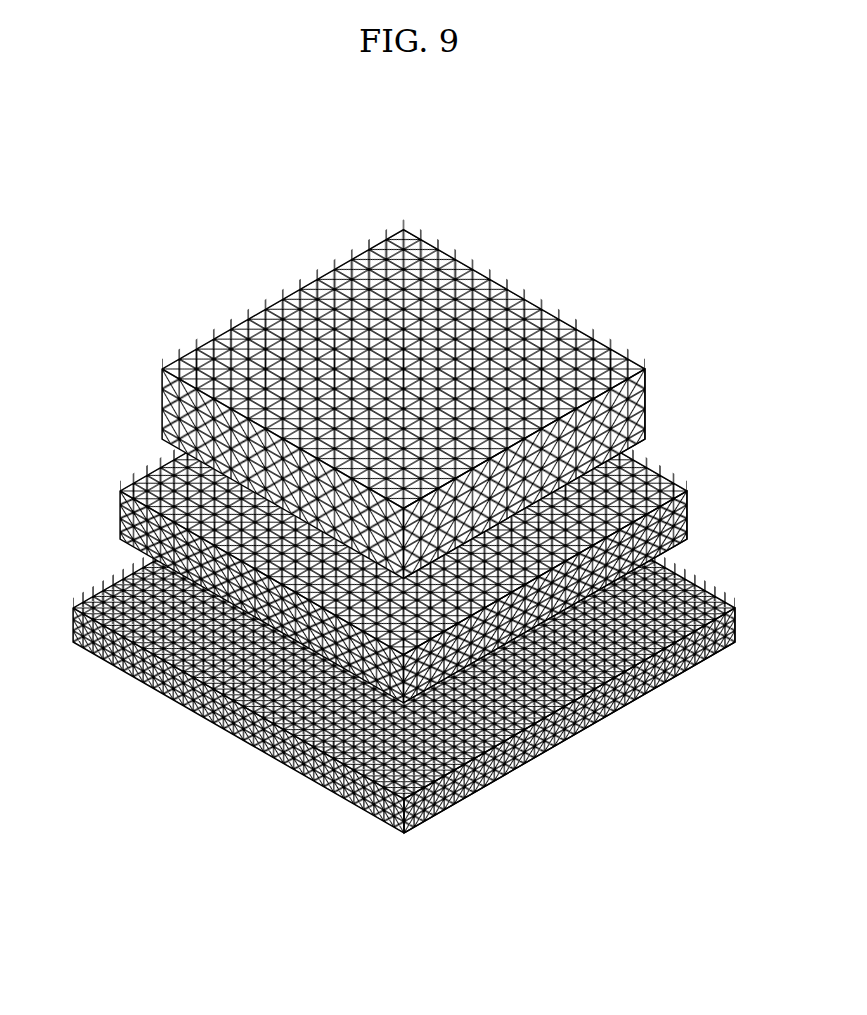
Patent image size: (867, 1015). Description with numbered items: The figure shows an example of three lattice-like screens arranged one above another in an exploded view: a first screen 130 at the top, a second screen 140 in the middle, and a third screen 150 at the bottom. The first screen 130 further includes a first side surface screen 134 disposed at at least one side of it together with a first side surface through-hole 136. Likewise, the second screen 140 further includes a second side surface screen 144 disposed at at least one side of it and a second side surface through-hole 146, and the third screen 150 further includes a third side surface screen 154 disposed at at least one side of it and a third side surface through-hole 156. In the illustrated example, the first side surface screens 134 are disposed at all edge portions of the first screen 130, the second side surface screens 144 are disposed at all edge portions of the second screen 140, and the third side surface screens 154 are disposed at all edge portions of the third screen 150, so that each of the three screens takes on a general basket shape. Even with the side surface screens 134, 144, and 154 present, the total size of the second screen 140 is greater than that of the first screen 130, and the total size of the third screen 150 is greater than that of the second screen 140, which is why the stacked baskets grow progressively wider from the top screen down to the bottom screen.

The first screen 130 is at (453, 376).
The first side surface screen 134 is at (627, 390).
The first side surface through-hole 136 is at (385, 257).
The second screen 140 is at (427, 509).
The second side surface screen 144 is at (675, 502).
The second side surface through-hole 146 is at (135, 476).
The third screen 150 is at (401, 620).
The third side surface screen 154 is at (625, 680).
The third side surface through-hole 156 is at (108, 578).